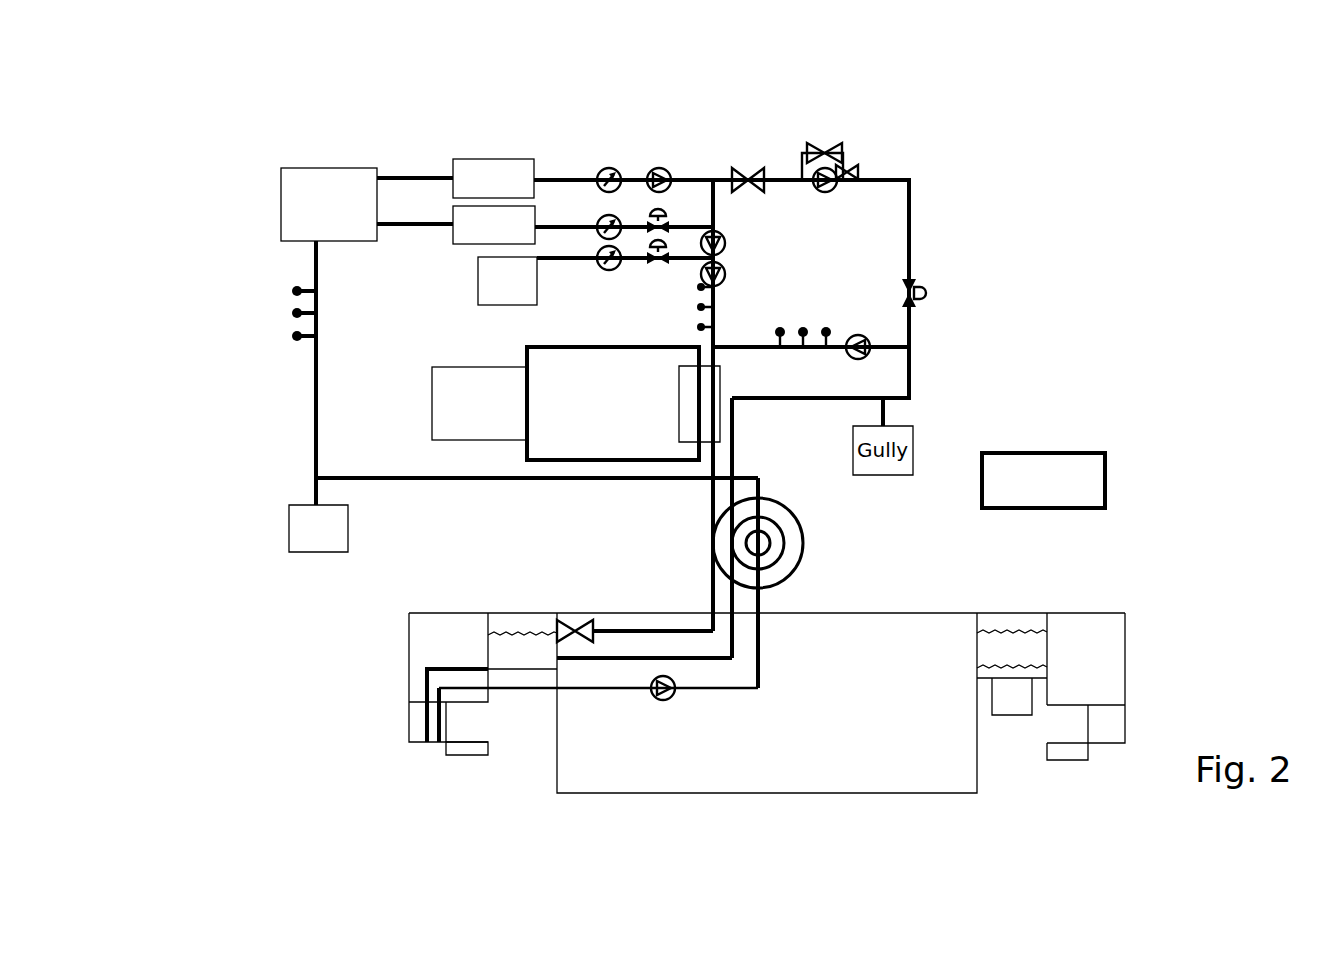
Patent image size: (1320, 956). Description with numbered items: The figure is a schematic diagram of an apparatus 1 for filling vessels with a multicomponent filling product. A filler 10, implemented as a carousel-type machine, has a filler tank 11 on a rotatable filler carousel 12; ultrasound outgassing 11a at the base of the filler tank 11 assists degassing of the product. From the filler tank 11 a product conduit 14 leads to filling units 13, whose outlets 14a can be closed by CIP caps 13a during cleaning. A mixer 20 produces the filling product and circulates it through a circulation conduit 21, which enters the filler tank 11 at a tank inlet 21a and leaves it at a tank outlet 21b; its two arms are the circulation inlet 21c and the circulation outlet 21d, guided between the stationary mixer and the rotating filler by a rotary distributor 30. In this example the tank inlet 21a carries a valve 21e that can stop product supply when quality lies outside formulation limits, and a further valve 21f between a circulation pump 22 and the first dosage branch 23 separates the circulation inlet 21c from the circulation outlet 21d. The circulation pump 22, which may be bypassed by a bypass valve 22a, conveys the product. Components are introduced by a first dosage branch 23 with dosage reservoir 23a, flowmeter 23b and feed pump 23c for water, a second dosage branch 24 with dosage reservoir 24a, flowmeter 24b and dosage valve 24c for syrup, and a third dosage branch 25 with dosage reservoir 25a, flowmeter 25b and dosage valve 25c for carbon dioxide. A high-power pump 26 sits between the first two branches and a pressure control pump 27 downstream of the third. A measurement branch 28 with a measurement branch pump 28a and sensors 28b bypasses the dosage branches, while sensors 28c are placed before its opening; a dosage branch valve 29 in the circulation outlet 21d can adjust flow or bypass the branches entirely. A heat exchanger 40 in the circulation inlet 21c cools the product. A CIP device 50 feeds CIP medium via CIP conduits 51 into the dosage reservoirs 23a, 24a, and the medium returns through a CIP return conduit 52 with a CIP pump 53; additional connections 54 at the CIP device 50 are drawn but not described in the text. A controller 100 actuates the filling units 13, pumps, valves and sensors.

The apparatus 1 is at (992, 392).
The filler 10 is at (312, 702).
The filler tank 11 is at (1030, 622).
The ultrasound outgassing 11a is at (1012, 698).
The filler carousel 12 is at (800, 770).
The filling unit 13 is at (420, 652).
The CIP cap 13a is at (465, 748).
The product conduit 14 is at (425, 683).
The outlet 14a is at (427, 745).
The mixer 20 is at (968, 218).
The circulation conduit 21 is at (912, 200).
The tank inlet 21a is at (557, 633).
The tank outlet 21b is at (555, 652).
The circulation inlet 21c is at (708, 598).
The circulation outlet 21d is at (727, 600).
The valve 21e is at (583, 625).
The further valve 21f is at (754, 172).
The circulation pump 22 is at (858, 175).
The bypass valve 22a is at (812, 150).
The first dosage branch 23 is at (458, 152).
The dosage reservoir 23a is at (500, 168).
The flowmeter 23b is at (613, 176).
The feed pump 23c is at (663, 175).
The second dosage branch 24 is at (440, 248).
The dosage reservoir 24a is at (482, 242).
The flowmeter 24b is at (600, 236).
The dosage valve 24c is at (668, 227).
The third dosage branch 25 is at (462, 303).
The dosage reservoir 25a is at (497, 298).
The flowmeter 25b is at (612, 270).
The dosage valve 25c is at (660, 268).
The high-power pump 26 is at (725, 243).
The pressure control pump 27 is at (725, 274).
The measurement branch 28 is at (798, 366).
The measurement branch pump 28a is at (860, 335).
The sensors 28b is at (825, 327).
The sensors 28c is at (706, 326).
The dosage branch valve 29 is at (925, 292).
The rotary distributor 30 is at (807, 537).
The heat exchanger 40 is at (557, 445).
The CIP device 50 is at (253, 208).
The CIP conduit 51 is at (427, 225).
The CIP return conduit 52 is at (757, 670).
The CIP pump 53 is at (672, 695).
The CIP connections 54 is at (293, 335).
The controller 100 is at (1085, 483).